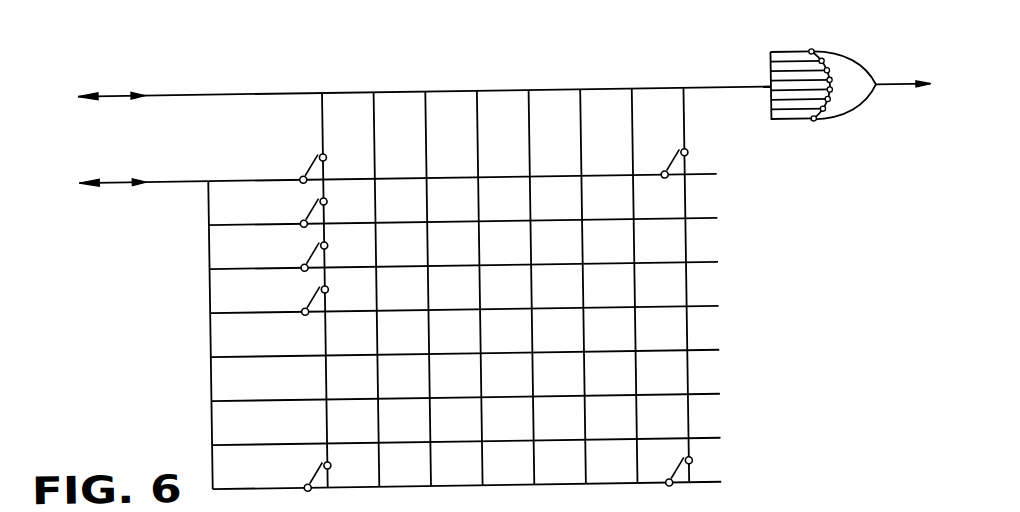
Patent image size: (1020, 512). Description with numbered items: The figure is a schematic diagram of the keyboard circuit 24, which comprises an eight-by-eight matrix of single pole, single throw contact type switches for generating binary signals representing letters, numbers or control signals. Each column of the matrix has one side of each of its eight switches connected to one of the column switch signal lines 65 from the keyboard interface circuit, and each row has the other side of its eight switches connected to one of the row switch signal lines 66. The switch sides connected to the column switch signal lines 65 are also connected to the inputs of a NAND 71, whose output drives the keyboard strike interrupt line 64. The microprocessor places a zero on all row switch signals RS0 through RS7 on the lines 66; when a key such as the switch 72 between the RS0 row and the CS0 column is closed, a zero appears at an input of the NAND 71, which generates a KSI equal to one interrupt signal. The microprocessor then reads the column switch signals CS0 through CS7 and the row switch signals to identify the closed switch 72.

The keyboard circuit 24 is at (836, 329).
The keyboard strike interrupt line 64 is at (891, 93).
The column switch signal lines 65 is at (113, 93).
The row switch signal lines 66 is at (112, 180).
The NAND 71 is at (855, 78).
The switch 72 is at (311, 162).